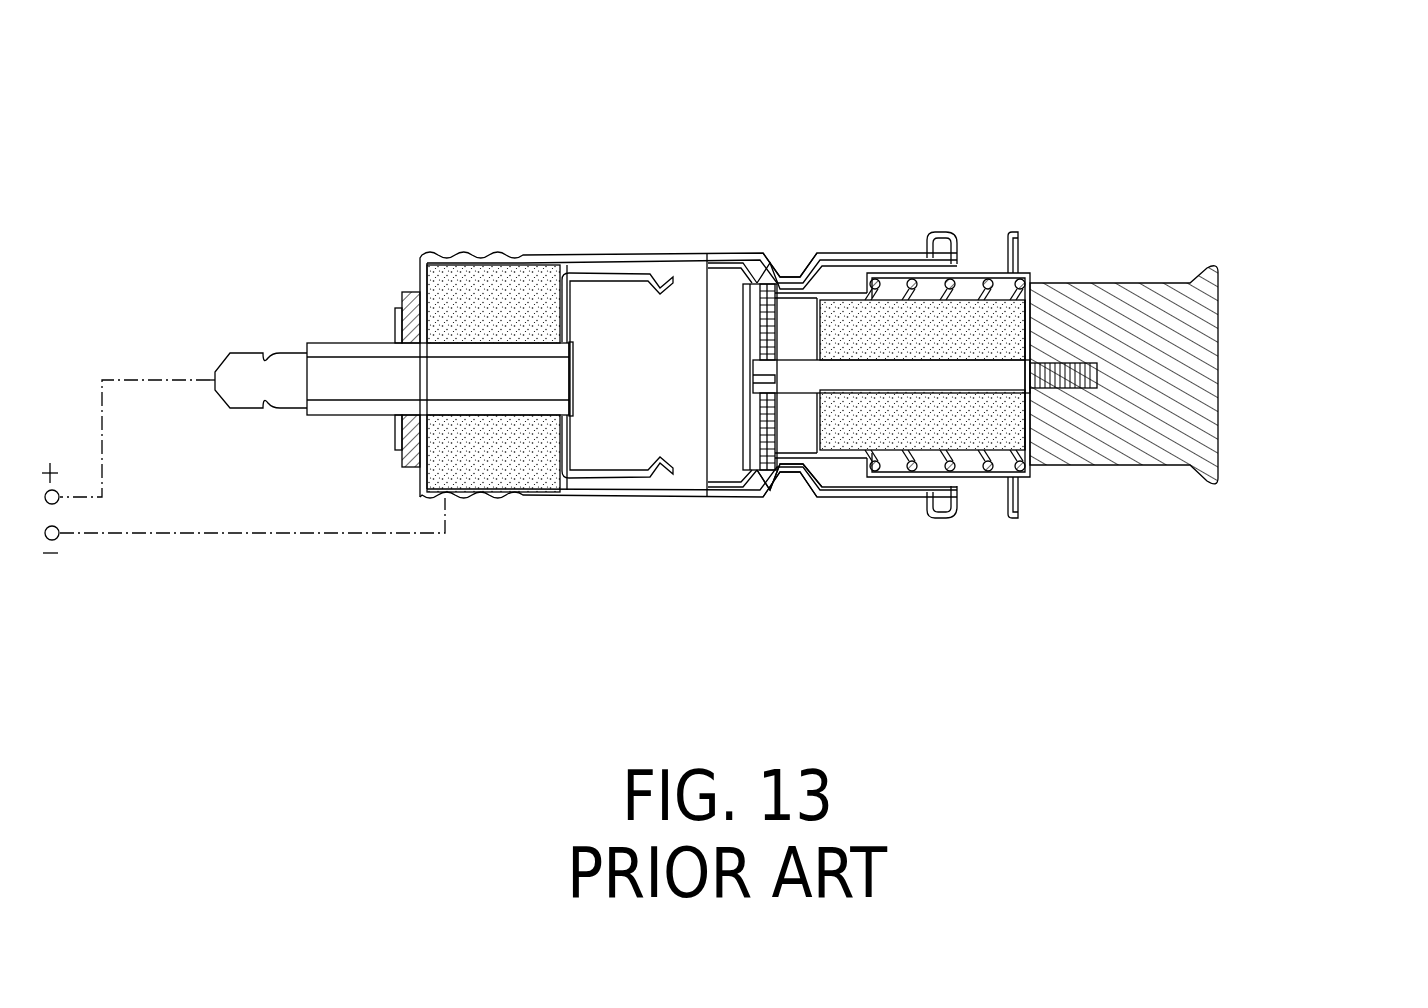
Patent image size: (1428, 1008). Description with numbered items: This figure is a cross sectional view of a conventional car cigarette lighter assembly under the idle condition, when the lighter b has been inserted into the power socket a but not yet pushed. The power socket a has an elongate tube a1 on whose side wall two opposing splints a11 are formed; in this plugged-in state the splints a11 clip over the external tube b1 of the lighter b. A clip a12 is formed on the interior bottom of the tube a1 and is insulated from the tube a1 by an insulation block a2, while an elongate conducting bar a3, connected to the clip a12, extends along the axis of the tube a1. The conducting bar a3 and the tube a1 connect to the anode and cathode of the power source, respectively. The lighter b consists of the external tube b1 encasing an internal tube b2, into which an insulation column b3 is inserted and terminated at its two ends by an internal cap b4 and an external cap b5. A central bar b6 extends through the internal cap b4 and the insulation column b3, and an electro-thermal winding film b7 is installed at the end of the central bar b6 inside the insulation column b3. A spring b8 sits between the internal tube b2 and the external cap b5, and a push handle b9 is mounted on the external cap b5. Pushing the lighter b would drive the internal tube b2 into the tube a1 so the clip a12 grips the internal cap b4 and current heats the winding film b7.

The power socket a is at (448, 197).
The elongate tube a1 is at (910, 257).
The insulation block a2 is at (487, 303).
The conducting bar a3 is at (357, 367).
The splints a11 is at (767, 253).
The clip a12 is at (610, 280).
The lighter b is at (1058, 522).
The external tube b1 is at (847, 257).
The internal tube b2 is at (975, 262).
The insulation column b3 is at (862, 415).
The internal cap b4 is at (747, 284).
The external cap b5 is at (1023, 268).
The central bar b6 is at (812, 483).
The winding film b7 is at (750, 450).
The spring b8 is at (913, 270).
The push handle b9 is at (1197, 343).